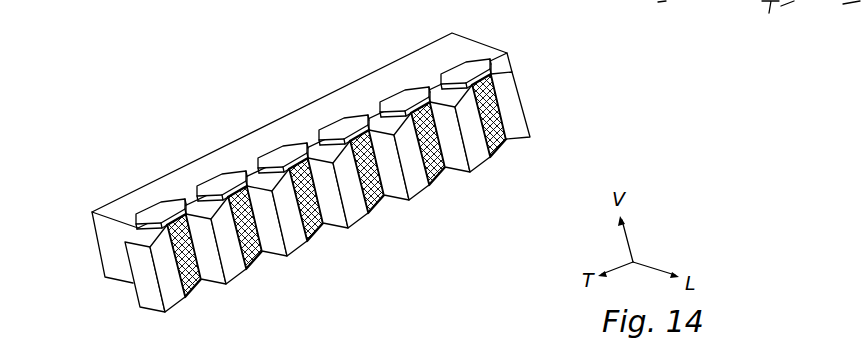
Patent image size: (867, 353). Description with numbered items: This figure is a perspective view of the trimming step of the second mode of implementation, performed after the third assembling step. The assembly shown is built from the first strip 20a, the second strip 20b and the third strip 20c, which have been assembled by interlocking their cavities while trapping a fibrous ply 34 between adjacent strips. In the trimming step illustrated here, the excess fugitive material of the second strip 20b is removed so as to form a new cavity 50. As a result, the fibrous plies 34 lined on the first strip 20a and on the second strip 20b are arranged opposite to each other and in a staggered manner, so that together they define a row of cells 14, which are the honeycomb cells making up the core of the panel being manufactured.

The cells 14 is at (340, 140).
The first strip 20a is at (488, 33).
The second strip 20b is at (490, 170).
The third strip 20c is at (509, 148).
The fibrous ply 34 is at (177, 214).
The new cavity 50 is at (437, 163).